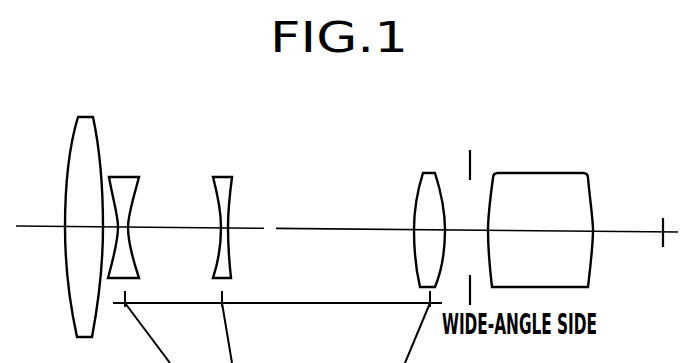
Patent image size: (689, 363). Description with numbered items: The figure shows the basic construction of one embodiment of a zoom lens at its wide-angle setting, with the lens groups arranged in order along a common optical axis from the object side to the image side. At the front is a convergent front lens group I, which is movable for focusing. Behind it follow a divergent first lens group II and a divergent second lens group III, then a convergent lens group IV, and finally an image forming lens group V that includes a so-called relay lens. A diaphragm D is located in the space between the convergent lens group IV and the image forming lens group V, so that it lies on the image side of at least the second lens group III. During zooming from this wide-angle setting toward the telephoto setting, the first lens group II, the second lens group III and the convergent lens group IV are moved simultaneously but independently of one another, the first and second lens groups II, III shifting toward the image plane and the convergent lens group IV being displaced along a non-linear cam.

The convergent front lens group I is at (88, 133).
The divergent first lens group II is at (127, 190).
The divergent second lens group III is at (222, 190).
The convergent lens group IV is at (433, 176).
The diaphragm D is at (471, 152).
The image forming lens group V is at (540, 185).